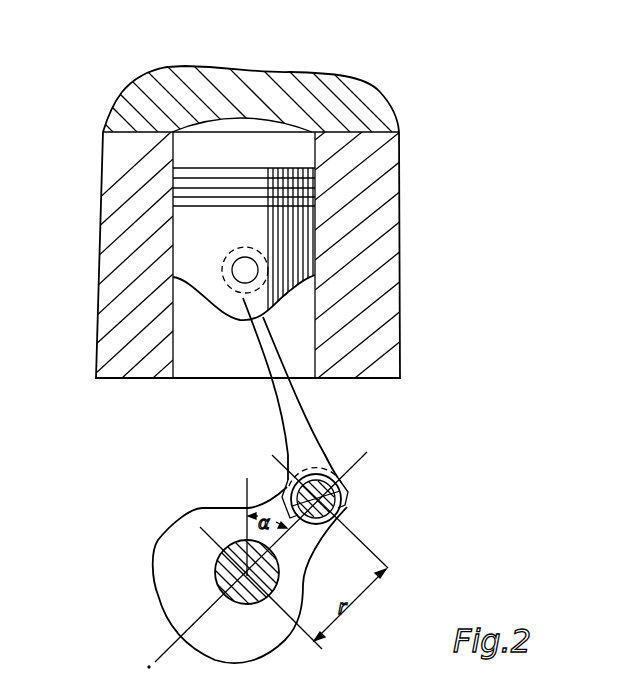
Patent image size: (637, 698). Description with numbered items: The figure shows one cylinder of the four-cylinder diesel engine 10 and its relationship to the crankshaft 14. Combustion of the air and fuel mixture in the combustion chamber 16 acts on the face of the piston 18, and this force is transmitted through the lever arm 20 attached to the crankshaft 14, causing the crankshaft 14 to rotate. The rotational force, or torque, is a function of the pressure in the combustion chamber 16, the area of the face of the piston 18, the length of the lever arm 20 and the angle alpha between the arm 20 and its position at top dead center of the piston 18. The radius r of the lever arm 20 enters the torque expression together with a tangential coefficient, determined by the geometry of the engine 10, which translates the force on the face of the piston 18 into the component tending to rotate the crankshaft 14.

The diesel engine 10 is at (96, 170).
The crankshaft 14 is at (216, 567).
The combustion chamber 16 is at (237, 138).
The piston 18 is at (297, 235).
The lever arm 20 is at (303, 545).